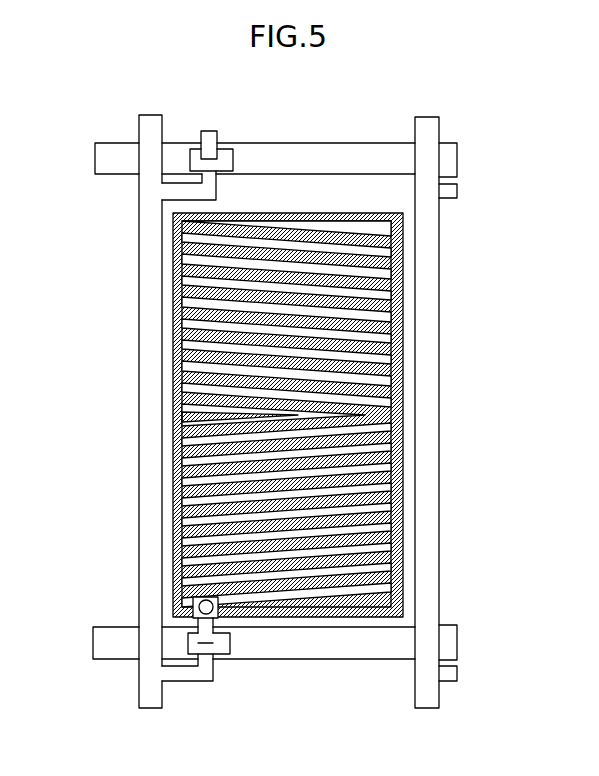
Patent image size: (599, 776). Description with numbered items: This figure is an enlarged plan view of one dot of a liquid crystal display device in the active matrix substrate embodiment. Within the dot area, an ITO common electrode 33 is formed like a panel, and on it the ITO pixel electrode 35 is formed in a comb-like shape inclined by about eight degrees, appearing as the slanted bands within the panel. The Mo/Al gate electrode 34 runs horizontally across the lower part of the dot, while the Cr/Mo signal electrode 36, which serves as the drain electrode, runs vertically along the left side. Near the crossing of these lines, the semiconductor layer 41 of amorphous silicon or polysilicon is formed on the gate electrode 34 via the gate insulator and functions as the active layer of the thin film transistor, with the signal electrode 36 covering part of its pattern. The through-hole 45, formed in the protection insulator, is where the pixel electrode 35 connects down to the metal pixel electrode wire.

The common electrode 33 is at (355, 343).
The gate electrode 34 is at (118, 643).
The pixel electrode 35 is at (400, 393).
The signal electrode 36 is at (148, 398).
The semiconductor layer 41 is at (222, 643).
The through-hole 45 is at (190, 603).